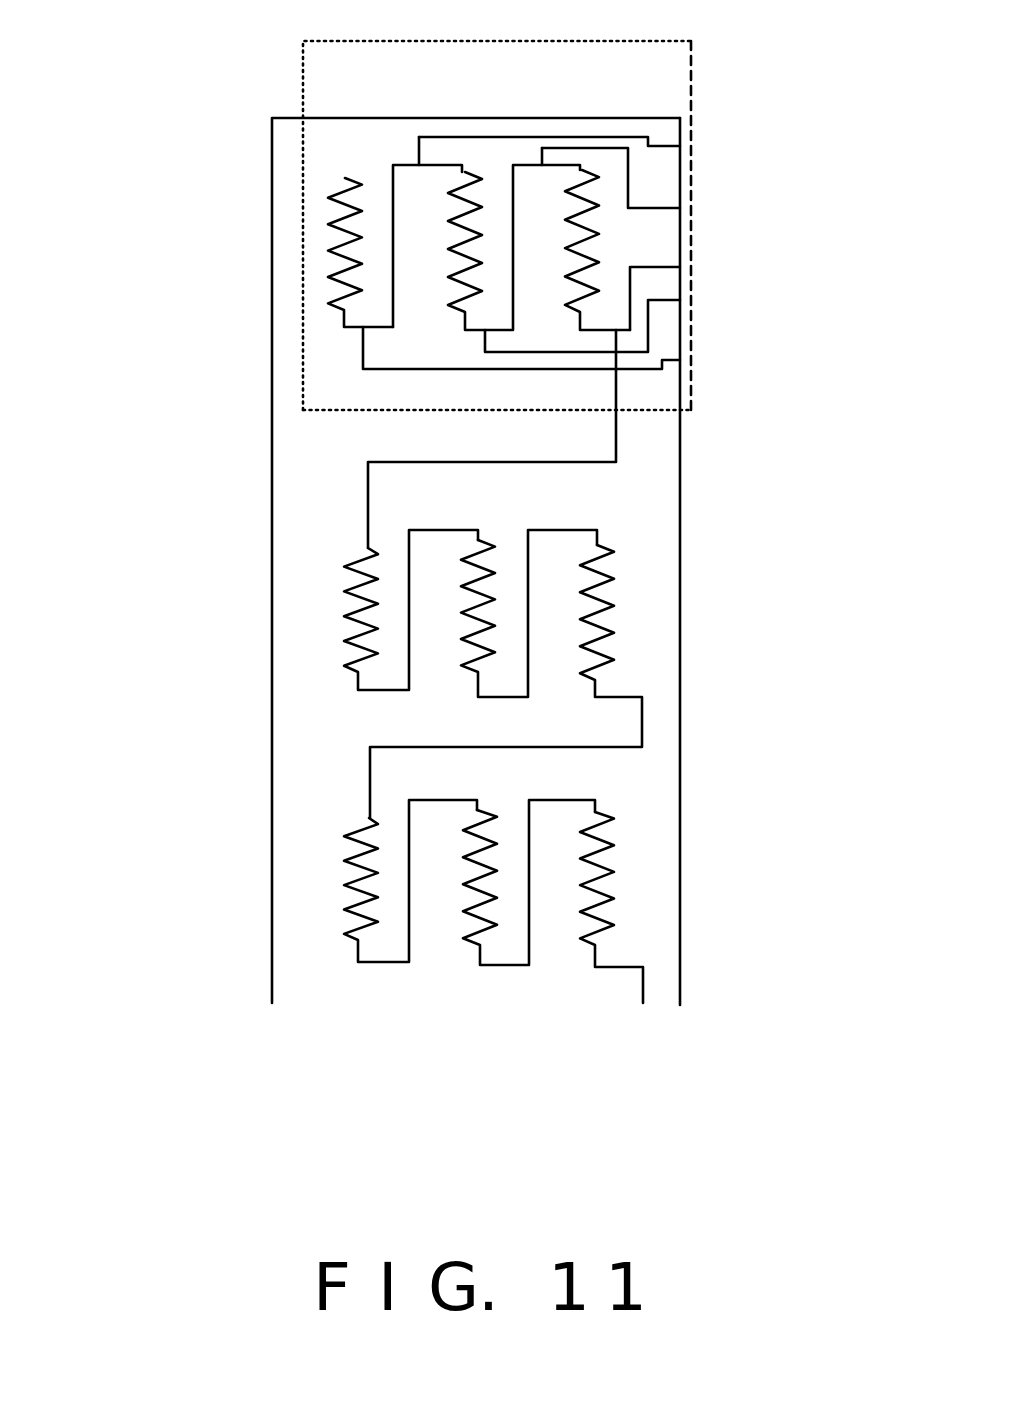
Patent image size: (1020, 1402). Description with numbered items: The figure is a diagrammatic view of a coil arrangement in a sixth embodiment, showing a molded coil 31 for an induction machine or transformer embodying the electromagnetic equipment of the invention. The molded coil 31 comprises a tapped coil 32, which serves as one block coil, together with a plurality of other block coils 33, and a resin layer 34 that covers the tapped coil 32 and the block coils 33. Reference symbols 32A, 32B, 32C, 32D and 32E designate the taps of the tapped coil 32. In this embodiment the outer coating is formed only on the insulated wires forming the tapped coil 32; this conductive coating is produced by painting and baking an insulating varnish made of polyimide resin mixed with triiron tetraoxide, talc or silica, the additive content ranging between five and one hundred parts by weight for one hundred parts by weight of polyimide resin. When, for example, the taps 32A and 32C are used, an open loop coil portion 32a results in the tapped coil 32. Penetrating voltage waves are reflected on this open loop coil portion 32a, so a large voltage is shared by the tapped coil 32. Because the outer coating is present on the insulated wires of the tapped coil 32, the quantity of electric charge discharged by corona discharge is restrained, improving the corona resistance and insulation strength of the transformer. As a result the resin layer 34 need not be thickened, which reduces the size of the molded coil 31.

The molded coil 31 is at (258, 129).
The tapped coil 32 is at (590, 410).
The open loop coil portion 32a is at (325, 229).
The tap 32A is at (597, 148).
The tap 32B is at (658, 192).
The tap 32C is at (702, 288).
The tap 32D is at (630, 320).
The tap 32E is at (567, 354).
The block coil 33 is at (340, 619).
The resin layer 34 is at (655, 868).